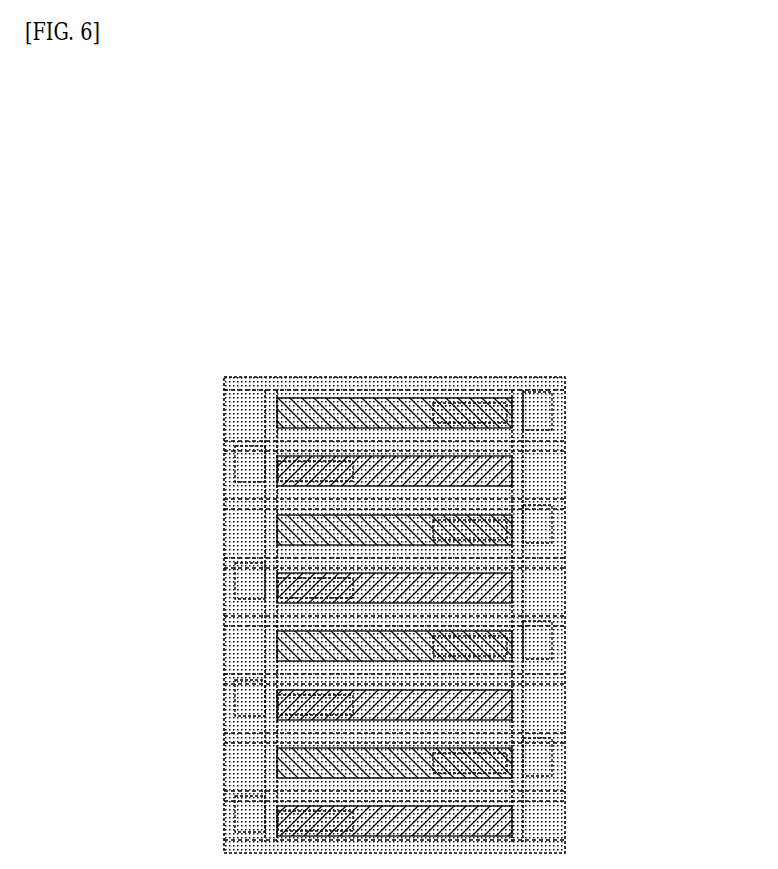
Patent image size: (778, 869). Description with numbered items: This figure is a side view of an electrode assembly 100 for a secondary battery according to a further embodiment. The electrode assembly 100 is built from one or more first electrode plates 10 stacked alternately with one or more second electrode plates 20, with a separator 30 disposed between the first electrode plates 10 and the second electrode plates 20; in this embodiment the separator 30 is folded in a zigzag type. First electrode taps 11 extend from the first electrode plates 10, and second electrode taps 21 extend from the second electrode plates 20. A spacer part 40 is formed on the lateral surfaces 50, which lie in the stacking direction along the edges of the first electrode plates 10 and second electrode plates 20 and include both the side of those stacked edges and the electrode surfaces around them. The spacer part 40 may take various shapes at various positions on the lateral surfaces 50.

The electrode assembly 100 is at (445, 297).
The first electrode plate 10 is at (273, 407).
The first electrode tap 11 is at (488, 389).
The second electrode plate 20 is at (510, 470).
The second electrode tap 21 is at (268, 583).
The separator 30 is at (565, 548).
The spacer part 40 is at (542, 815).
The lateral surface 50 is at (264, 392).